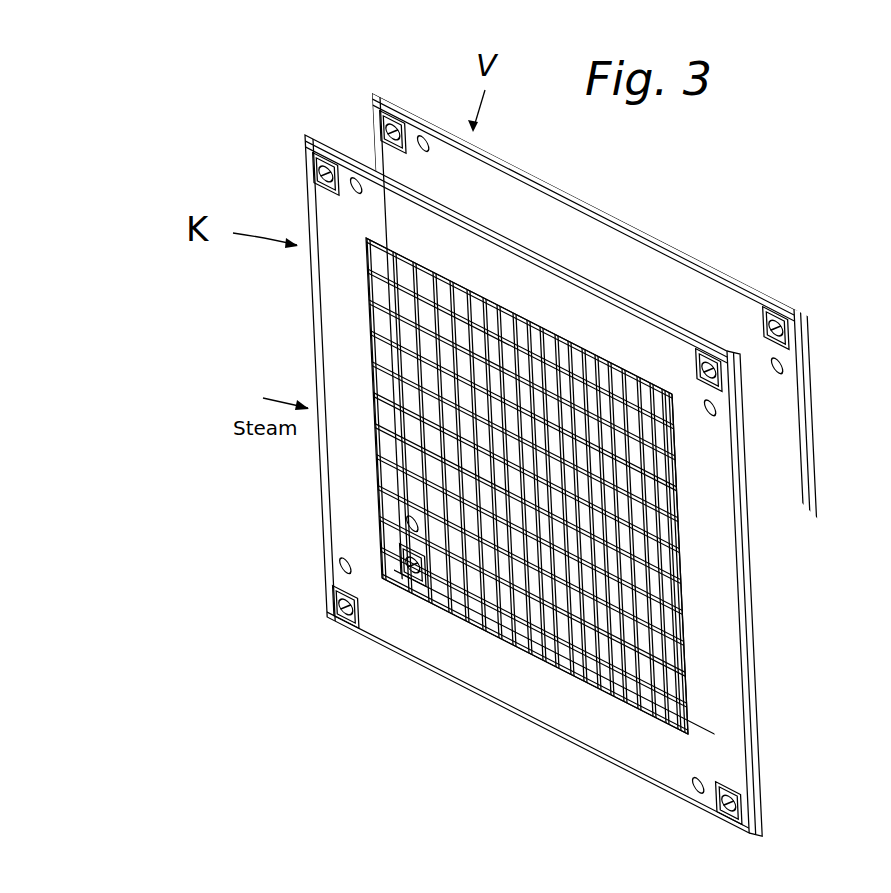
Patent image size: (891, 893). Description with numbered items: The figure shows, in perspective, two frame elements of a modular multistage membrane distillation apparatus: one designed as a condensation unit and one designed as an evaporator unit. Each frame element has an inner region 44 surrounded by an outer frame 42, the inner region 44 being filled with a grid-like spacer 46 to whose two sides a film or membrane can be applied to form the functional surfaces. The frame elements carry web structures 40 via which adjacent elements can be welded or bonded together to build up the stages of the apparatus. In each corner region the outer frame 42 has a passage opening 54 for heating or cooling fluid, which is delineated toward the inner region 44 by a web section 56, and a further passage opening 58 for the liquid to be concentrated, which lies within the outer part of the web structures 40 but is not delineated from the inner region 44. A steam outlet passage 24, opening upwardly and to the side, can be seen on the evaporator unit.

The steam outlet passage 24 is at (635, 230).
The web structure 40 is at (312, 300).
The outer frame 42 is at (510, 277).
The inner region 44 is at (587, 405).
The grid-like spacer 46 is at (630, 397).
The passage opening 54 is at (376, 128).
The web section 56 is at (380, 150).
The passage opening 58 is at (425, 143).